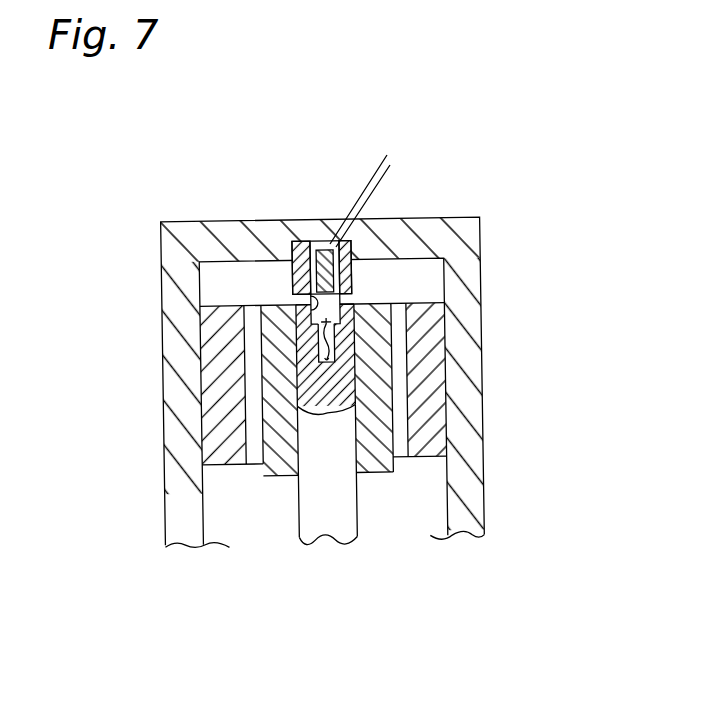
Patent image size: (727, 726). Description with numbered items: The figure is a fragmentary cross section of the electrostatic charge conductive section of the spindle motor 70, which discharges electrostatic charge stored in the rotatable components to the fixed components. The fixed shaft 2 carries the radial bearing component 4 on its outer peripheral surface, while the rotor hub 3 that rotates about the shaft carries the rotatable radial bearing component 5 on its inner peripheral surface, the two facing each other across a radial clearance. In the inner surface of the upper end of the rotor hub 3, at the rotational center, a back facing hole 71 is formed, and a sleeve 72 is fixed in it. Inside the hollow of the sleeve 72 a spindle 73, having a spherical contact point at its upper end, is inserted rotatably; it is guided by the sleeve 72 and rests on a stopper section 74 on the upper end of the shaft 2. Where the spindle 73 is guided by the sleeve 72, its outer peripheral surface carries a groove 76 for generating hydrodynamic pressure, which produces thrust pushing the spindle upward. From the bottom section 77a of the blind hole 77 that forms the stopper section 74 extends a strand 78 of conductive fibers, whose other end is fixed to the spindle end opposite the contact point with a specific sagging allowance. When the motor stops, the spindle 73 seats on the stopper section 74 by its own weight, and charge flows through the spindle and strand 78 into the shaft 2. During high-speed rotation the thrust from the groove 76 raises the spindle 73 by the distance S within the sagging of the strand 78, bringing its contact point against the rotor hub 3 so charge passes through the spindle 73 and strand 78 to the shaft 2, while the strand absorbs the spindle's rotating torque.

The shaft 2 is at (337, 523).
The rotor hub 3 is at (173, 295).
The radial bearing component 4 is at (268, 374).
The rotatable radial bearing component 5 is at (212, 422).
The spindle motor 70 is at (434, 169).
The back facing hole 71 is at (322, 255).
The sleeve 72 is at (300, 243).
The spindle 73 is at (312, 240).
The stopper section 74 is at (295, 278).
The groove for generating hydrodynamic pressure 76 is at (352, 268).
The blind hole 77 is at (321, 352).
The bottom section 77a is at (334, 350).
The strand 78 is at (330, 333).
The distance S is at (376, 207).